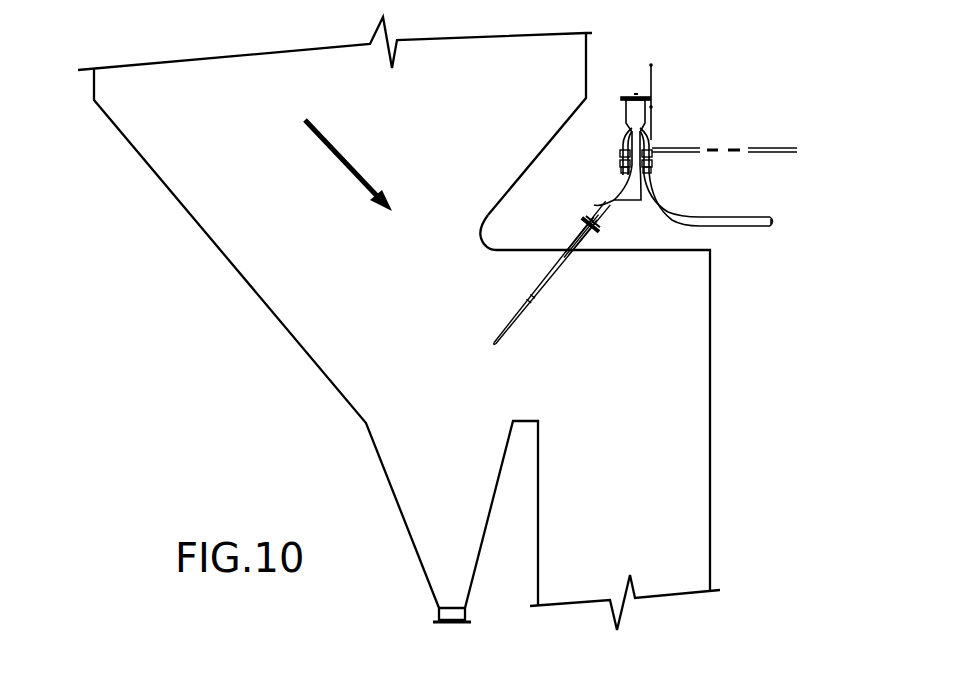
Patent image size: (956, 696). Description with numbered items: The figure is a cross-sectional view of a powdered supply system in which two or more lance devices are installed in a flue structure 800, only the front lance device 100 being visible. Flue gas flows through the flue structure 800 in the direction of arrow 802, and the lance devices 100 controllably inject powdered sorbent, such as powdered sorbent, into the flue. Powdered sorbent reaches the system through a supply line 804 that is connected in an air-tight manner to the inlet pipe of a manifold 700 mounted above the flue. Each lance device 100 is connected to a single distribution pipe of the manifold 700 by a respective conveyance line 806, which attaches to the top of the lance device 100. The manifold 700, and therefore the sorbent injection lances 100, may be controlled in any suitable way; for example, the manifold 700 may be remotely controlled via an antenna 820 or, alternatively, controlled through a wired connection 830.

The lance device 100 is at (566, 293).
The manifold 700 is at (622, 97).
The flue structure 800 is at (218, 258).
The arrow 802 is at (355, 130).
The supply line 804 is at (756, 228).
The conveyance line 806 is at (617, 192).
The antenna 820 is at (653, 88).
The wired connection 830 is at (763, 147).